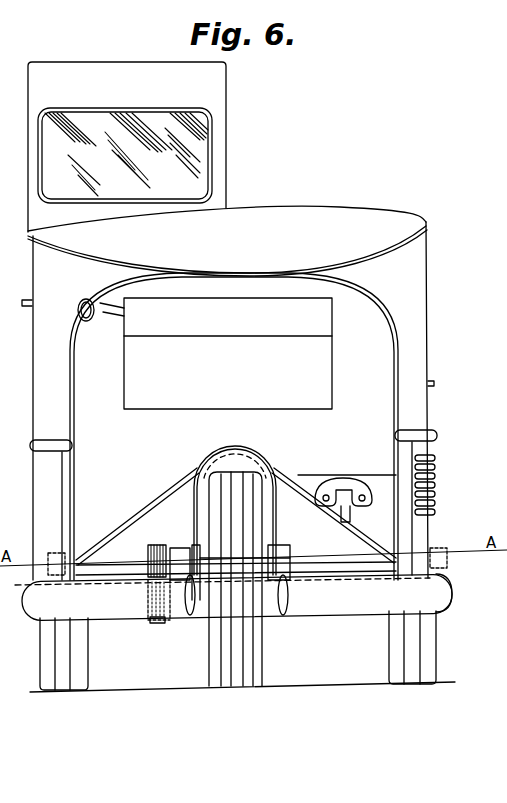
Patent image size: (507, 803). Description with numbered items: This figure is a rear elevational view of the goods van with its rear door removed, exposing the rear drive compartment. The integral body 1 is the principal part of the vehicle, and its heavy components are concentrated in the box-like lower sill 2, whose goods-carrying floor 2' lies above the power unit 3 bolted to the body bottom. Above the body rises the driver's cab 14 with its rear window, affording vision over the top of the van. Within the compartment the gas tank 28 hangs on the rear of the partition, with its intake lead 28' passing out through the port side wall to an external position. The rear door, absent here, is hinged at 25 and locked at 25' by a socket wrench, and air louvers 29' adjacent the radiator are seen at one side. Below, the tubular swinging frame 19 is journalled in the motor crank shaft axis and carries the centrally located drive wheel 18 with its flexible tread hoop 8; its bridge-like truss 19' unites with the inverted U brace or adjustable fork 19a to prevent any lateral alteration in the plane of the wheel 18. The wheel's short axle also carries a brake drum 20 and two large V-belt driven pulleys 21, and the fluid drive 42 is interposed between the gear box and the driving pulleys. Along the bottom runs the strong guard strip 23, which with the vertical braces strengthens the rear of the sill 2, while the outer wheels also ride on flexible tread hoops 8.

The body 1 is at (422, 305).
The driver's cab 14 is at (218, 102).
The gas tank 28 is at (244, 353).
The intake lead 28' is at (82, 299).
The hinge 25 is at (401, 412).
The lock 25' is at (69, 451).
The power unit 3 is at (350, 477).
The air louvers 29' is at (442, 485).
The bridge-like truss 19' is at (236, 507).
The tubular swinging frame 19 is at (236, 558).
The adjustable fork 19a is at (196, 516).
The fluid drive 42 is at (177, 548).
The brake drum 20 is at (262, 561).
The driven pulleys 21 is at (152, 616).
The floor 2' is at (254, 559).
The sill 2 is at (233, 609).
The guard strip 23 is at (454, 594).
The flexible tread hoop 8 is at (45, 649).
The drive wheel 18 is at (258, 651).